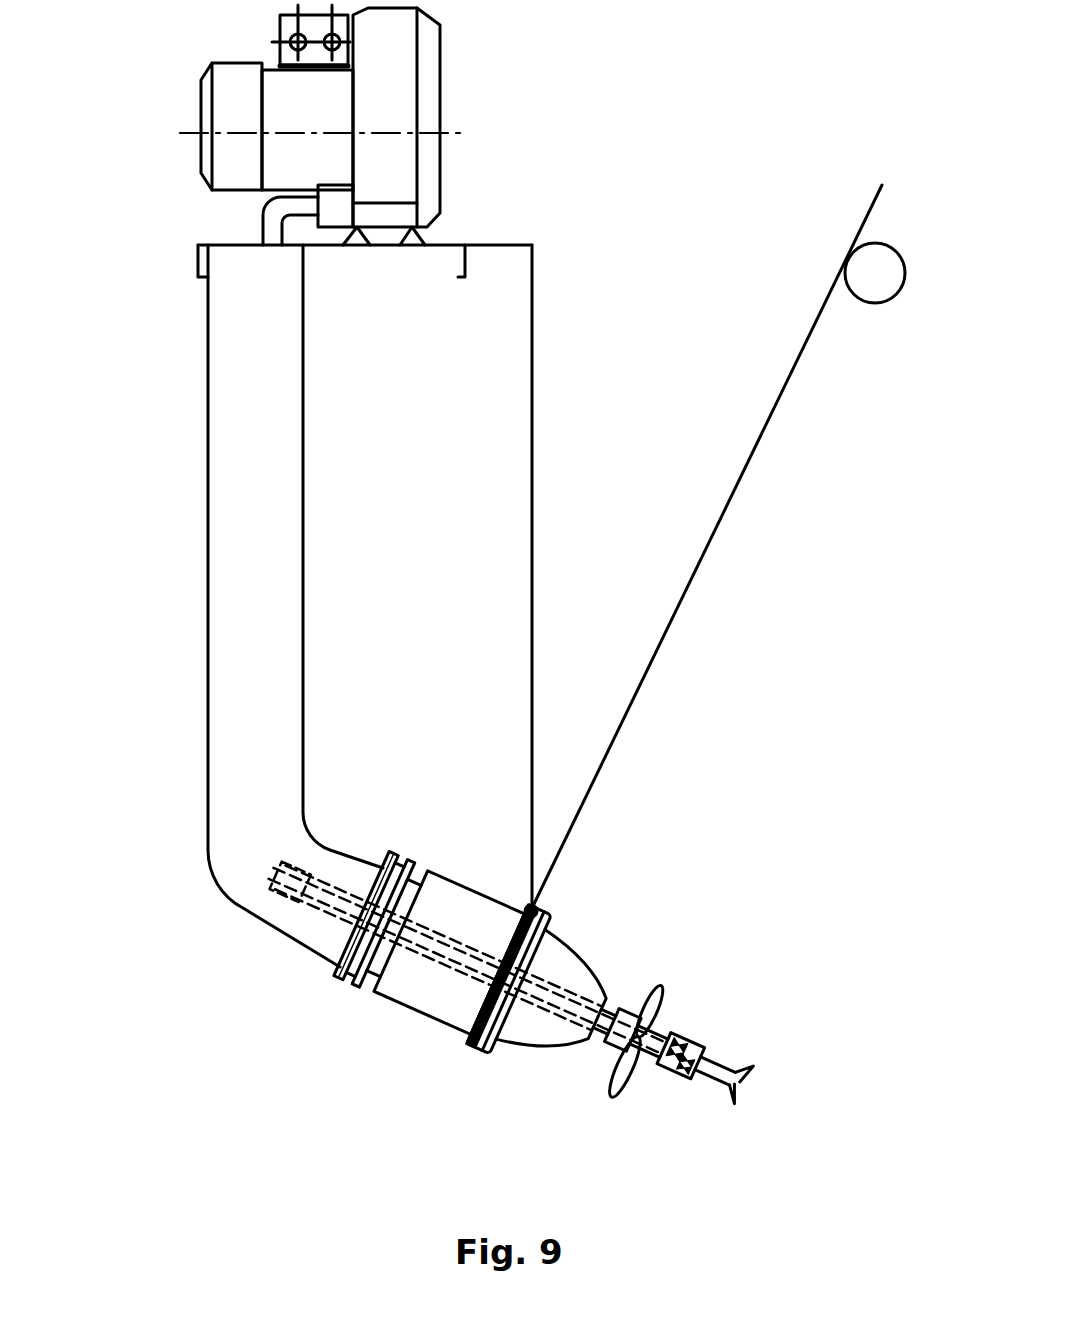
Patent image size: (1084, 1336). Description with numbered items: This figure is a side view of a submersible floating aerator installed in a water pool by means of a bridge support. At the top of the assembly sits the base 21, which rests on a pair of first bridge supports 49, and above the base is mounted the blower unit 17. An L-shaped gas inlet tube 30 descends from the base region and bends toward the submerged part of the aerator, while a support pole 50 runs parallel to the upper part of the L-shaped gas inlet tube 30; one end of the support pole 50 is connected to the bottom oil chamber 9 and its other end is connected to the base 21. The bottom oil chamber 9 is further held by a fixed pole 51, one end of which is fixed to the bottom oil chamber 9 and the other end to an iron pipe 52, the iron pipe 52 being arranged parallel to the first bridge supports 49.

The bottom oil chamber 9 is at (480, 1040).
The blower 17 is at (512, 84).
The base 21 is at (493, 245).
The L-shaped gas inlet tube 30 is at (207, 793).
The first bridge supports 49 is at (198, 260).
The support pole 50 is at (516, 380).
The fixed pole 51 is at (805, 543).
The iron pipe 52 is at (960, 343).